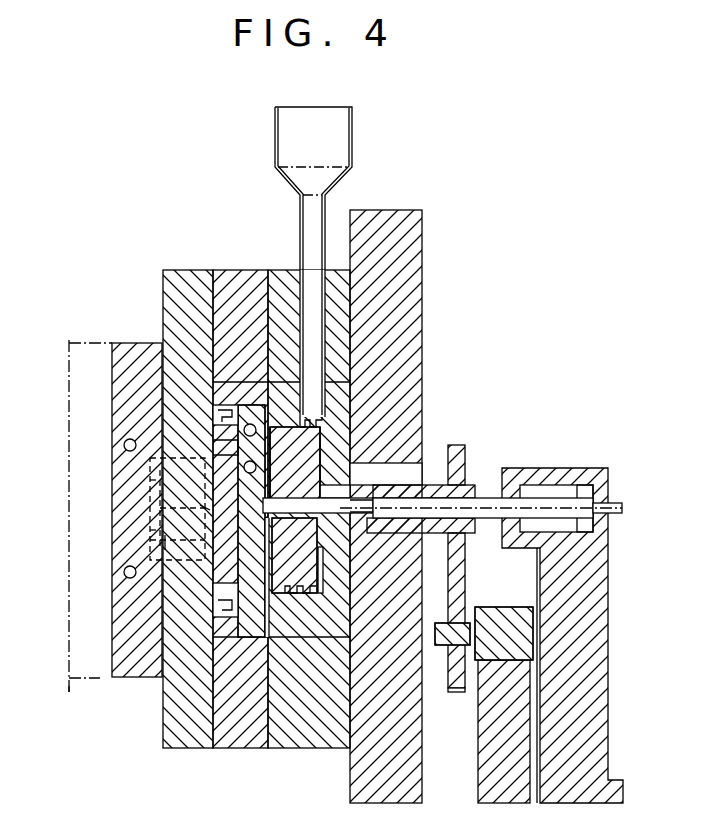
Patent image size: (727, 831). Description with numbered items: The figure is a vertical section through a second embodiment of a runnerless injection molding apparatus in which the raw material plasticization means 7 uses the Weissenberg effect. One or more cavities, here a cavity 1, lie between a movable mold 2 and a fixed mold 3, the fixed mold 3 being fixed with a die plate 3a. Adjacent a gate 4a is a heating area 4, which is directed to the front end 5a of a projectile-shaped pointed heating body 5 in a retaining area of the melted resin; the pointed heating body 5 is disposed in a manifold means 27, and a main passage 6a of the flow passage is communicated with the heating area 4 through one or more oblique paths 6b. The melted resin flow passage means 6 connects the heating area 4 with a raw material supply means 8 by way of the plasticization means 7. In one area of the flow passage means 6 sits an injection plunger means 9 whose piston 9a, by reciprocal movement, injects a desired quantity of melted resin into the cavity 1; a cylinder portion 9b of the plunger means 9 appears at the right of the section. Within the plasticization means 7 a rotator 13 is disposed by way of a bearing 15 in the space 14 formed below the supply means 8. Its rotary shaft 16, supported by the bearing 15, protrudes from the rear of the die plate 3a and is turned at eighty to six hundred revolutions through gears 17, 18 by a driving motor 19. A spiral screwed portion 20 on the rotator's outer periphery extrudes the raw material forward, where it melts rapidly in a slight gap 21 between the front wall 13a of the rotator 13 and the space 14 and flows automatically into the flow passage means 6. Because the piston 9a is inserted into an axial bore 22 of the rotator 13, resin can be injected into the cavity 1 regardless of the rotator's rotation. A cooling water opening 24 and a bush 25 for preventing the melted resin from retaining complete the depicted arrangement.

The cavity 1 is at (145, 540).
The movable mold 2 is at (97, 688).
The fixed mold 3 is at (340, 762).
The die plate 3a is at (408, 234).
The heating area 4 is at (135, 560).
The gate 4a is at (130, 530).
The pointed heating body 5 is at (170, 455).
The front end 5a is at (150, 480).
The melted resin flow passage means 6 is at (263, 542).
The main passage 6a is at (165, 535).
The oblique path 6b is at (165, 508).
The raw material plasticization means 7 is at (287, 400).
The raw material supply means 8 is at (343, 132).
The injection plunger means 9 is at (483, 508).
The piston 9a is at (300, 575).
The plunger cylinder 9b is at (557, 493).
The rotator 13 is at (297, 577).
The front wall 13a is at (284, 490).
The space 14 is at (318, 593).
The bearing 15 is at (360, 474).
The rotary shaft 16 is at (432, 488).
The gear 17 is at (465, 553).
The gear 18 is at (466, 598).
The driving motor 19 is at (517, 607).
The spiral screwed portion 20 is at (330, 420).
The slight gap 21 is at (263, 592).
The axial bore 22 is at (357, 512).
The cooling water opening 24 is at (112, 445).
The bush 25 is at (133, 582).
The manifold means 27 is at (205, 515).